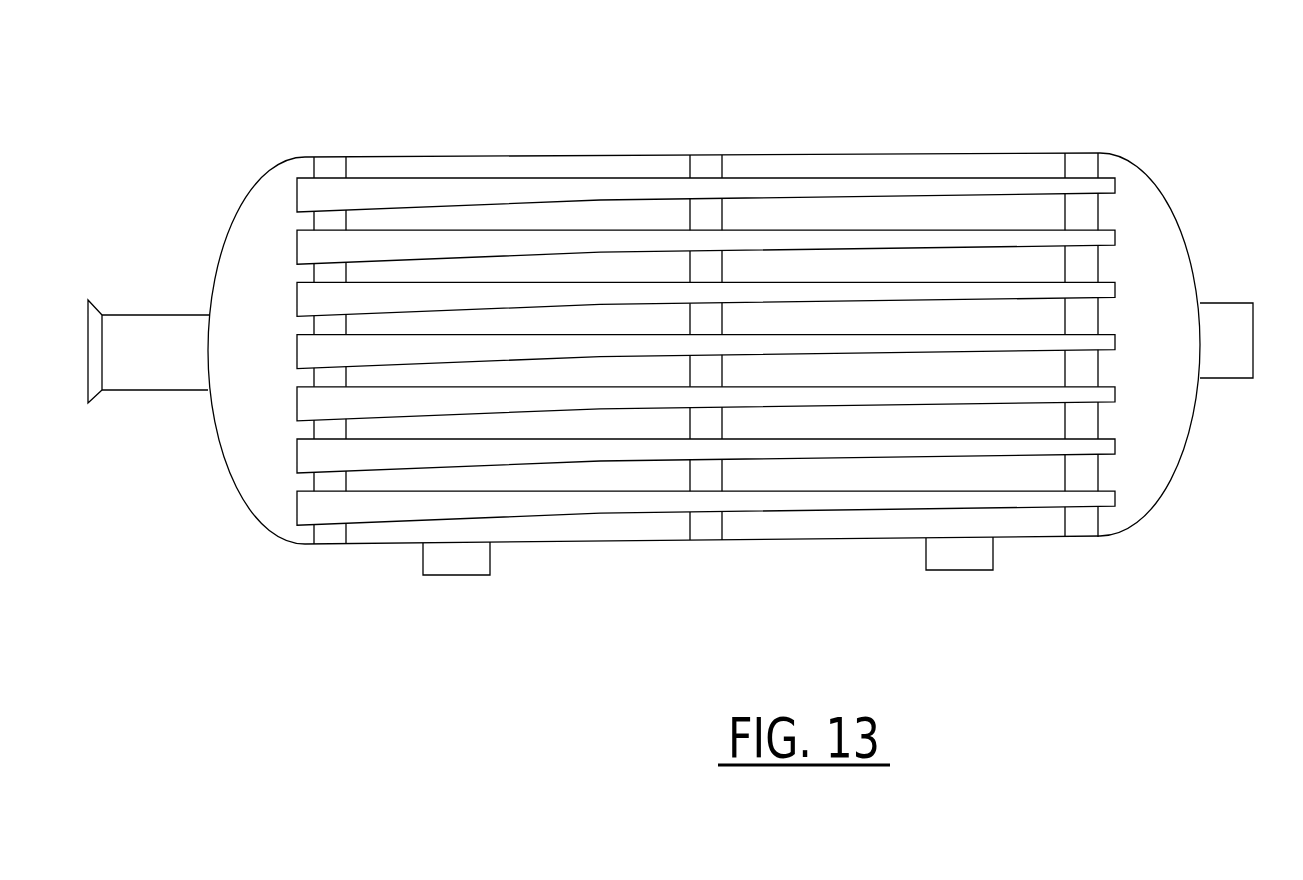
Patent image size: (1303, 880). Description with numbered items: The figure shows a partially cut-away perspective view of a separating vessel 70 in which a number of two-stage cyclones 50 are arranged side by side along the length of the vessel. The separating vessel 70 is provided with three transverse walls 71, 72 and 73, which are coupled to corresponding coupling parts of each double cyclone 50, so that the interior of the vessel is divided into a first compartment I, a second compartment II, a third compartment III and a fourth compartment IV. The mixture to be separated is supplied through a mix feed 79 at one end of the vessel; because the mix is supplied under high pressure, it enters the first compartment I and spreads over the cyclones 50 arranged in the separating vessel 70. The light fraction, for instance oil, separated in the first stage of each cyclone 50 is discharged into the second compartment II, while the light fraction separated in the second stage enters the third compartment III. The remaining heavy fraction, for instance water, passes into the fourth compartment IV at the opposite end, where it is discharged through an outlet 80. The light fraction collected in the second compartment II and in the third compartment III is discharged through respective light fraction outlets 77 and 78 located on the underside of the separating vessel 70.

The separating vessel 70 is at (628, 153).
The two-stage cyclone 50 is at (857, 192).
The wall 71 is at (332, 535).
The wall 72 is at (700, 528).
The wall 73 is at (1083, 520).
The light fraction outlet 77 is at (455, 565).
The light fraction outlet 78 is at (958, 553).
The mix feed 79 is at (148, 337).
The outlet 80 is at (1230, 320).
The first compartment I is at (263, 485).
The second compartment II is at (572, 527).
The third compartment III is at (832, 525).
The fourth compartment IV is at (1152, 457).